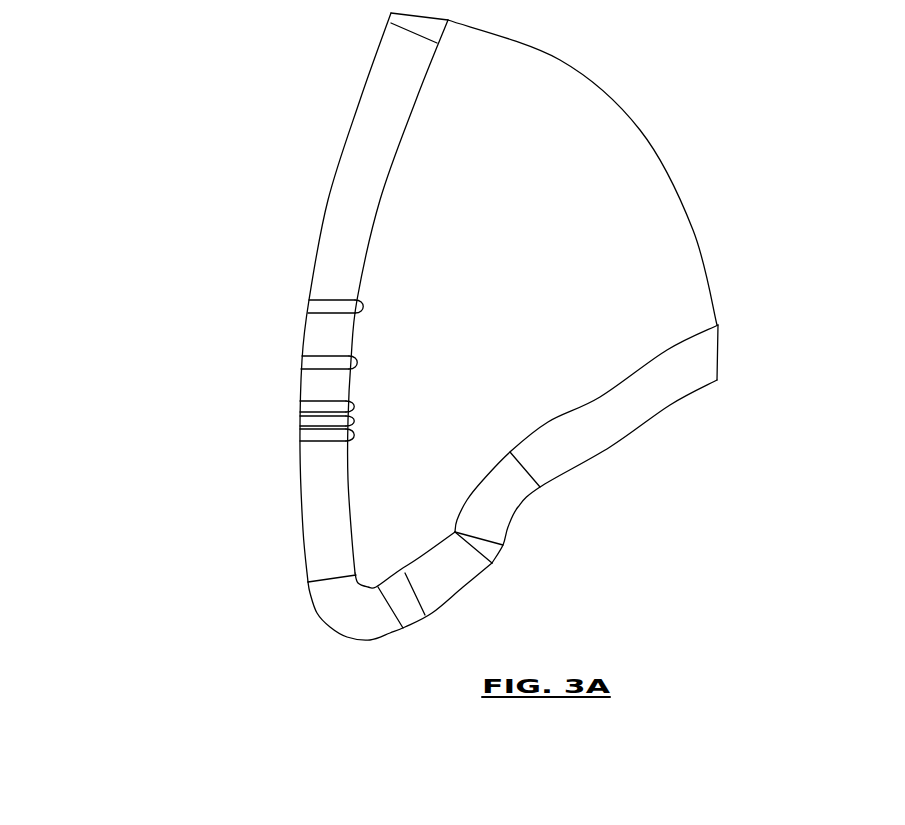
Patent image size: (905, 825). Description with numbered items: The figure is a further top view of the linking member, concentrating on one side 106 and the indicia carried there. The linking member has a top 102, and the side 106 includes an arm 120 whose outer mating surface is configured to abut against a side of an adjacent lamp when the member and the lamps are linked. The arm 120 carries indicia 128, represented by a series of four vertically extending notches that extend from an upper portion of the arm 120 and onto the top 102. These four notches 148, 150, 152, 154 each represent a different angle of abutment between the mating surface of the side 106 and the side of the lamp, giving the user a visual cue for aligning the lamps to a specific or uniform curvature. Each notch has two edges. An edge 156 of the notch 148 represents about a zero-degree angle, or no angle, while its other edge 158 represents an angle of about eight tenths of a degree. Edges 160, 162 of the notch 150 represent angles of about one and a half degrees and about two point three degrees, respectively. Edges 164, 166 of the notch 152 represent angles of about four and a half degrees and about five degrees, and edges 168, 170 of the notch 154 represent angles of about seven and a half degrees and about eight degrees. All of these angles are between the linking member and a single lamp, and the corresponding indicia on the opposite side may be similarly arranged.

The top 102 is at (607, 175).
The side 106 is at (292, 142).
The arm 120 is at (320, 223).
The indicia 128 is at (175, 332).
The notch 148 is at (318, 436).
The notch 150 is at (318, 405).
The notch 152 is at (316, 360).
The notch 154 is at (322, 302).
The edge 156 is at (347, 444).
The edge 158 is at (350, 421).
The edge 160 is at (318, 420).
The edge 162 is at (352, 397).
The edge 164 is at (316, 369).
The edge 166 is at (338, 357).
The edge 168 is at (322, 313).
The edge 170 is at (340, 300).